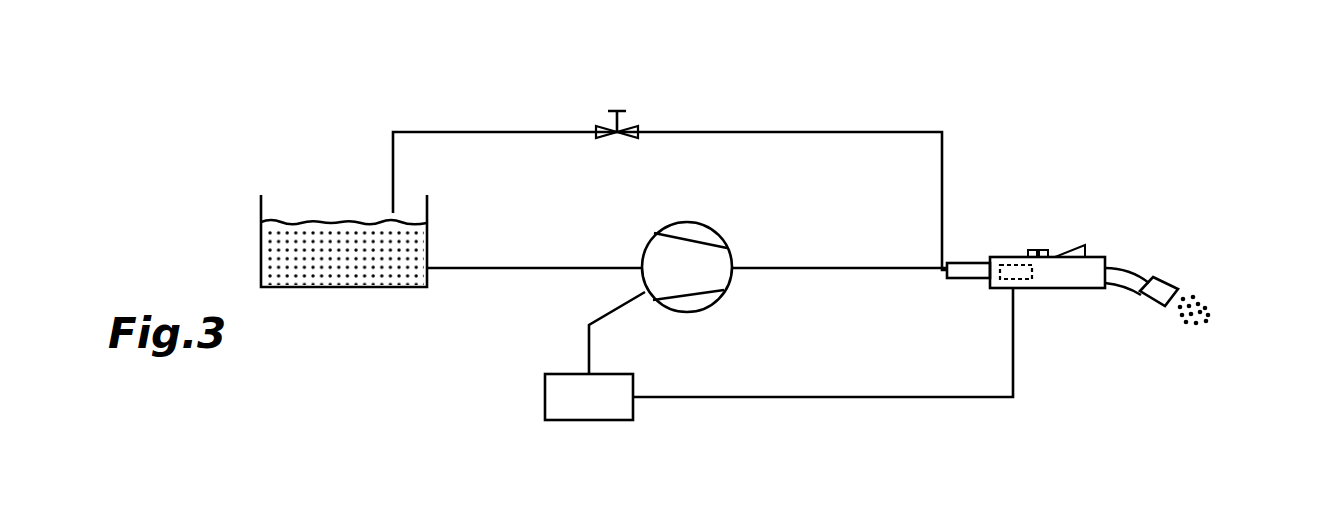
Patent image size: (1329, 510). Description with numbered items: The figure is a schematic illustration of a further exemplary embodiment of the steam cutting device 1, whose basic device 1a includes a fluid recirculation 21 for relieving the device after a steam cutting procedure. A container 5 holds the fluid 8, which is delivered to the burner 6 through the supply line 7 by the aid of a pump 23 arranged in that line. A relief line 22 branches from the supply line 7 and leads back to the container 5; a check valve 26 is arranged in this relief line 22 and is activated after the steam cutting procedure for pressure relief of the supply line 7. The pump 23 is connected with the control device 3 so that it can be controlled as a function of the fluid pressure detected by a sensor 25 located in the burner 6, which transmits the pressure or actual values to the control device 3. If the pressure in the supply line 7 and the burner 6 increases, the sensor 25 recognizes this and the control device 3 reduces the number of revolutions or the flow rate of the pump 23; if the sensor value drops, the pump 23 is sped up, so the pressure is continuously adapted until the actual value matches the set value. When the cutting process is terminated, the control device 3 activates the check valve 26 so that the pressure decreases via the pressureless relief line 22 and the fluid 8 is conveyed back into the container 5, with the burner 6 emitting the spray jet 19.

The steam cutting device 1 is at (337, 110).
The basic device 1a is at (988, 143).
The control device 3 is at (572, 399).
The container 5 is at (287, 308).
The burner 6 is at (1079, 313).
The supply line 7 is at (549, 278).
The fluid 8 is at (340, 245).
The spray jet 19 is at (1208, 293).
The fluid recirculation 21 is at (232, 163).
The relief line 22 is at (778, 131).
The pump 23 is at (682, 268).
The sensor 25 is at (996, 288).
The check valve 26 is at (597, 112).